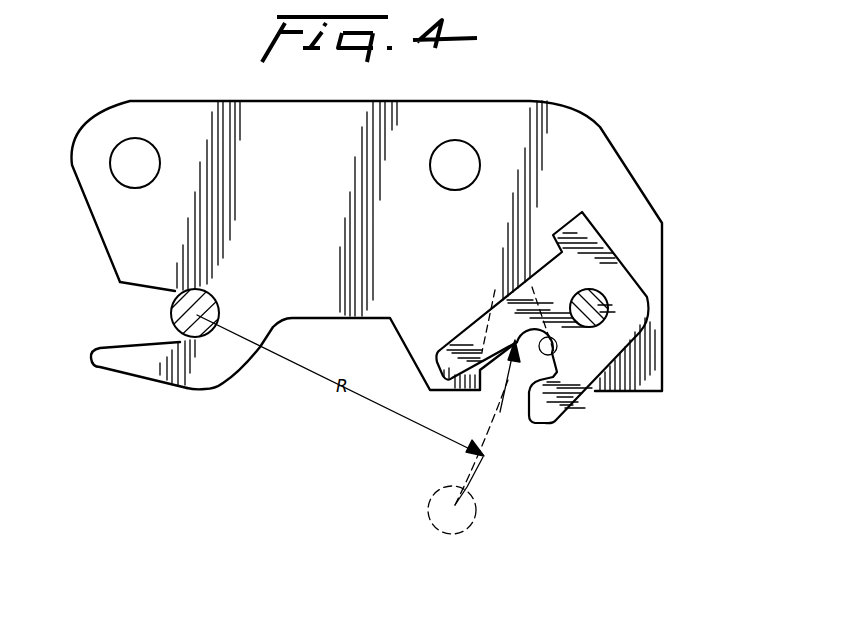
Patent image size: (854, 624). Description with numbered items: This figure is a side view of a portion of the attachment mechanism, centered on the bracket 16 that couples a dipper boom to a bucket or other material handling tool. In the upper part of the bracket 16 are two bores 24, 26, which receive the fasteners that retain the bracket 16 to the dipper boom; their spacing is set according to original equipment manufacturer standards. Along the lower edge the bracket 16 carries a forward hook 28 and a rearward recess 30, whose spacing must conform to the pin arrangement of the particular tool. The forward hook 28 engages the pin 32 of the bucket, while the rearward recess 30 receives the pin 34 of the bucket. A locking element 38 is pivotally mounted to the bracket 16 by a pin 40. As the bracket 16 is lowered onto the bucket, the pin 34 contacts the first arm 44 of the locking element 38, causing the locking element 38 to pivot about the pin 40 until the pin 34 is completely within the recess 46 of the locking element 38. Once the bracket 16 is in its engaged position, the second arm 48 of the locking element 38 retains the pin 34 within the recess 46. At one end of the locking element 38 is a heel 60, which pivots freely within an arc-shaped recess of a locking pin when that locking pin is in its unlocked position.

The bracket 16 is at (615, 143).
The bore 24 is at (135, 142).
The bore 26 is at (458, 143).
The forward hook 28 is at (102, 363).
The rearward recess 30 is at (487, 373).
The pin 32 is at (170, 319).
The pin 34 is at (477, 518).
The locking element 38 is at (525, 280).
The pin 40 is at (643, 273).
The first arm 44 is at (472, 348).
The recess 46 is at (540, 357).
The second arm 48 is at (550, 425).
The heel 60 is at (560, 225).